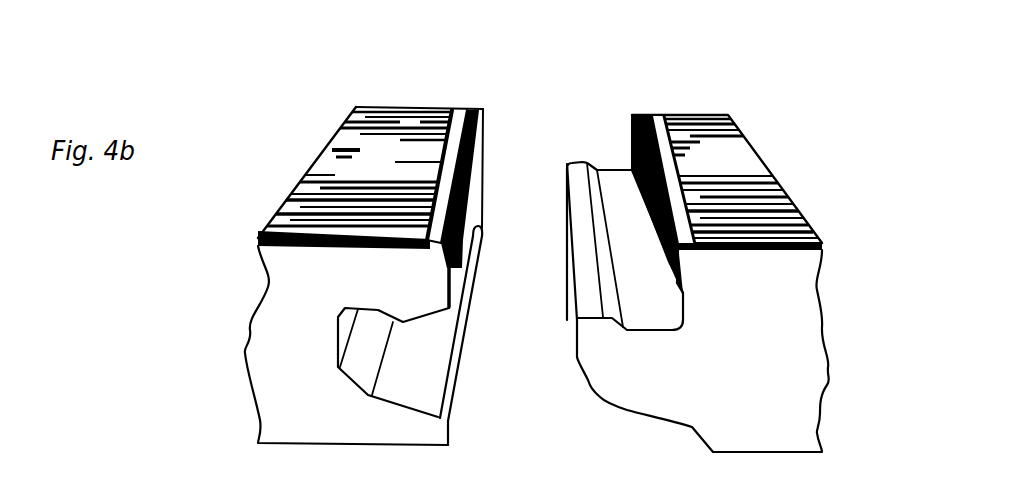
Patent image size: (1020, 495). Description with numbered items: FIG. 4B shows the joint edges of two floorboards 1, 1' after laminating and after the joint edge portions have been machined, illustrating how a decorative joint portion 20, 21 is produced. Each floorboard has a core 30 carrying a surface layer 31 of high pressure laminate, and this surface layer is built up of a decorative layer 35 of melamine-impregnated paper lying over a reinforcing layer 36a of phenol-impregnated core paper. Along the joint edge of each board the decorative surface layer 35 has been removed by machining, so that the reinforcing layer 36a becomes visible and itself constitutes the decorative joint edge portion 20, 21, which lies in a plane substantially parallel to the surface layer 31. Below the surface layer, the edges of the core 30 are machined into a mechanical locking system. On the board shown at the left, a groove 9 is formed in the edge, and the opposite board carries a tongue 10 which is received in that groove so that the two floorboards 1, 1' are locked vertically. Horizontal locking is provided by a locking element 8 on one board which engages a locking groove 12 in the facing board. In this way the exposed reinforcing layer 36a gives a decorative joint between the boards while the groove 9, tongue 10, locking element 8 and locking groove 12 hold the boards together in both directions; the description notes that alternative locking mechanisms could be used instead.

The floorboard 1 is at (331, 135).
The floorboard 1' is at (755, 141).
The locking element 8 is at (577, 324).
The groove 9 is at (425, 360).
The tongue 10 is at (592, 380).
The locking groove 12 is at (348, 308).
The decorative joint portion 20 is at (478, 110).
The decorative joint portion 21 is at (653, 114).
The core 30 is at (247, 375).
The surface layer 31 is at (294, 197).
The decorative layer 35 is at (455, 110).
The reinforcing layer 36a is at (453, 178).